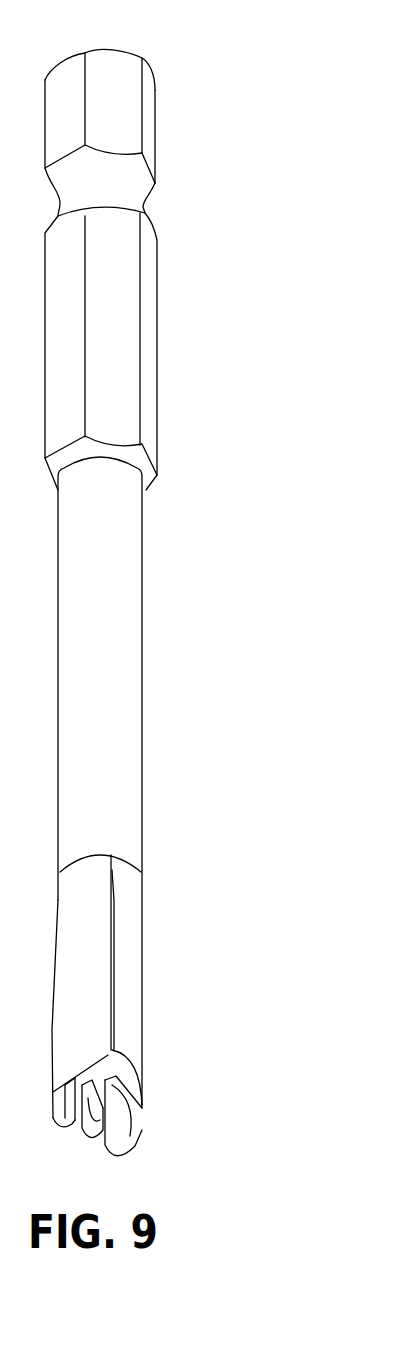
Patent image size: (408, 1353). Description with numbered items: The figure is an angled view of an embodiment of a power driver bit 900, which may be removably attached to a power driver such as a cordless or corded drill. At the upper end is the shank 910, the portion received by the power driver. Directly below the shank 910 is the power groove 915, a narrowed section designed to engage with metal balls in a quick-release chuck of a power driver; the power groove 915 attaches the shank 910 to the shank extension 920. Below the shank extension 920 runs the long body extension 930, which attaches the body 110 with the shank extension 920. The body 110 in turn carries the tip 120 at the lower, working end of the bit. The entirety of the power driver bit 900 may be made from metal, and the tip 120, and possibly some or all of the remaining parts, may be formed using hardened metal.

The power driver bit 900 is at (236, 72).
The shank 910 is at (156, 167).
The power groove 915 is at (143, 203).
The shank extension 920 is at (158, 348).
The body extension 930 is at (143, 672).
The body 110 is at (143, 948).
The tip 120 is at (177, 1078).